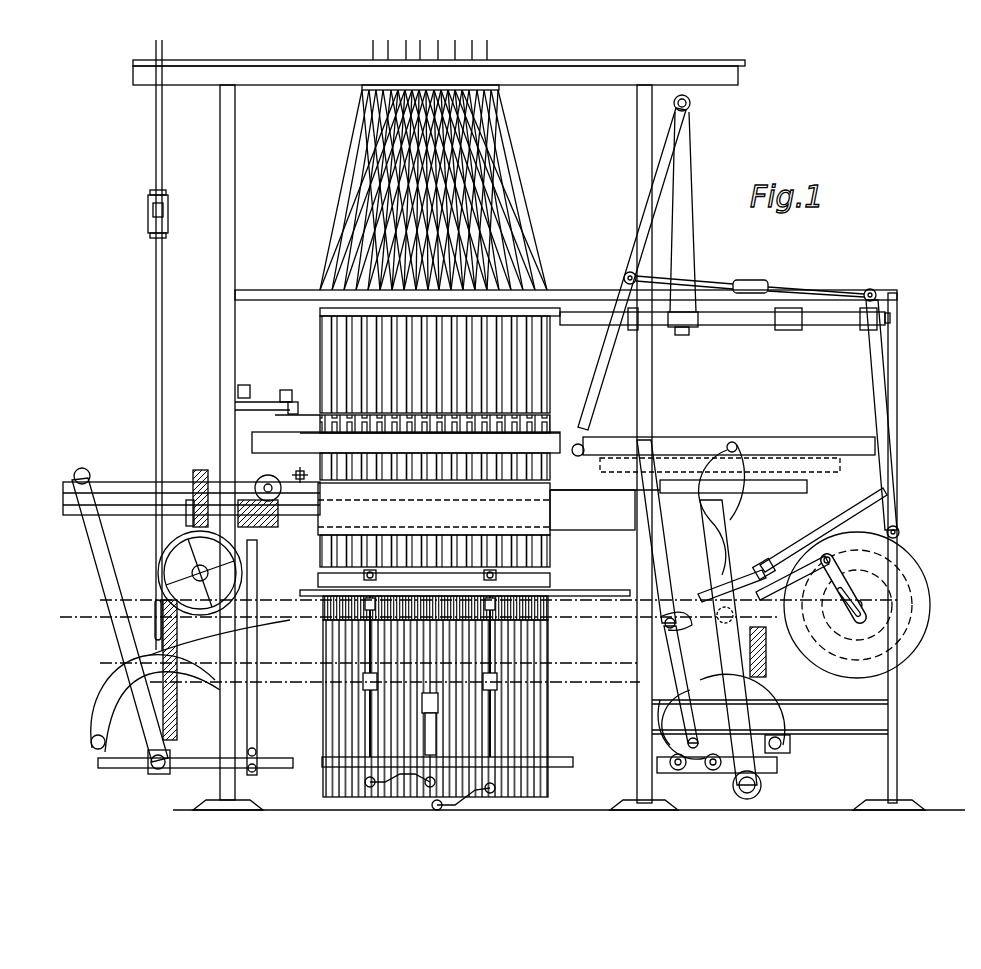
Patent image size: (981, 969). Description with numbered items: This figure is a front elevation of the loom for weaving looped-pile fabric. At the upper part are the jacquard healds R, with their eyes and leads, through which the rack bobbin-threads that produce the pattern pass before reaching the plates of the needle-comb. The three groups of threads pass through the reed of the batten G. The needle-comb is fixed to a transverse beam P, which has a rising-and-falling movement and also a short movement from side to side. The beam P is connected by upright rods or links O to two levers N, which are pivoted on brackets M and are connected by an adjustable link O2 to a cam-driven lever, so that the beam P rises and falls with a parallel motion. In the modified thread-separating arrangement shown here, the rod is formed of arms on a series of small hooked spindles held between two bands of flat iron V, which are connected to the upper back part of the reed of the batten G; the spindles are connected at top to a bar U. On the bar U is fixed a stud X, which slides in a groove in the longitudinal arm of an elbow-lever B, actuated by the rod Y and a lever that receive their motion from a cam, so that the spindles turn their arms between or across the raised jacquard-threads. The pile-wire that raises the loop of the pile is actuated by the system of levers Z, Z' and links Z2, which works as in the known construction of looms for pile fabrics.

The jacquard healds R is at (435, 364).
The bar U is at (430, 409).
The flat iron bands V is at (406, 456).
The transverse beam P is at (434, 575).
The upright rods or links O is at (433, 676).
The adjustable link O2 is at (441, 724).
The levers N is at (335, 783).
The batten G is at (402, 490).
The rod Y is at (262, 393).
The stud X is at (296, 385).
The elbow-lever B is at (297, 411).
The brackets M is at (428, 638).
The lever Z is at (635, 275).
The links Z2 is at (756, 281).
The lever Z' is at (901, 419).